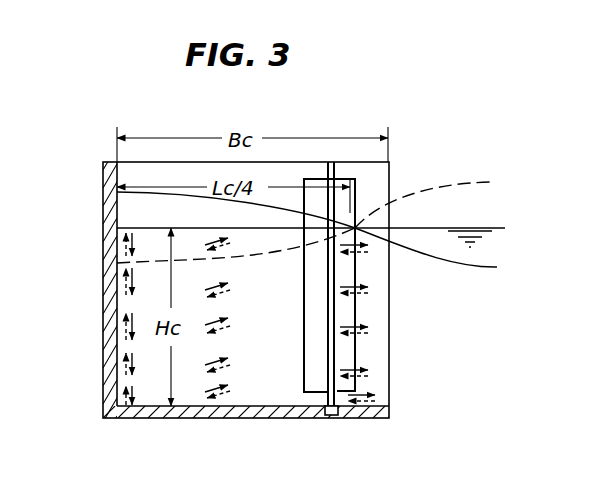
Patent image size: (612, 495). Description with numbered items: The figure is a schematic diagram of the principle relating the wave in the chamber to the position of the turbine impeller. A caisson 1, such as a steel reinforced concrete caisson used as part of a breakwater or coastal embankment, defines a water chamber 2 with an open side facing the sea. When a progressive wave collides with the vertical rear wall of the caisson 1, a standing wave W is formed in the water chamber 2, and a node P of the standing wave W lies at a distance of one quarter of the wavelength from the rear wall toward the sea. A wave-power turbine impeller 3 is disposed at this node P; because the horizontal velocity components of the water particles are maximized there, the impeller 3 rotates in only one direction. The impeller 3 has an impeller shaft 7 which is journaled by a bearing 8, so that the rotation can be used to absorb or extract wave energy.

The caisson 1 is at (103, 380).
The water chamber 2 is at (275, 349).
The wave-power turbine impeller 3 is at (318, 377).
The impeller shaft 7 is at (327, 397).
The bearing 8 is at (335, 416).
The node P is at (384, 201).
The standing wave W is at (457, 268).